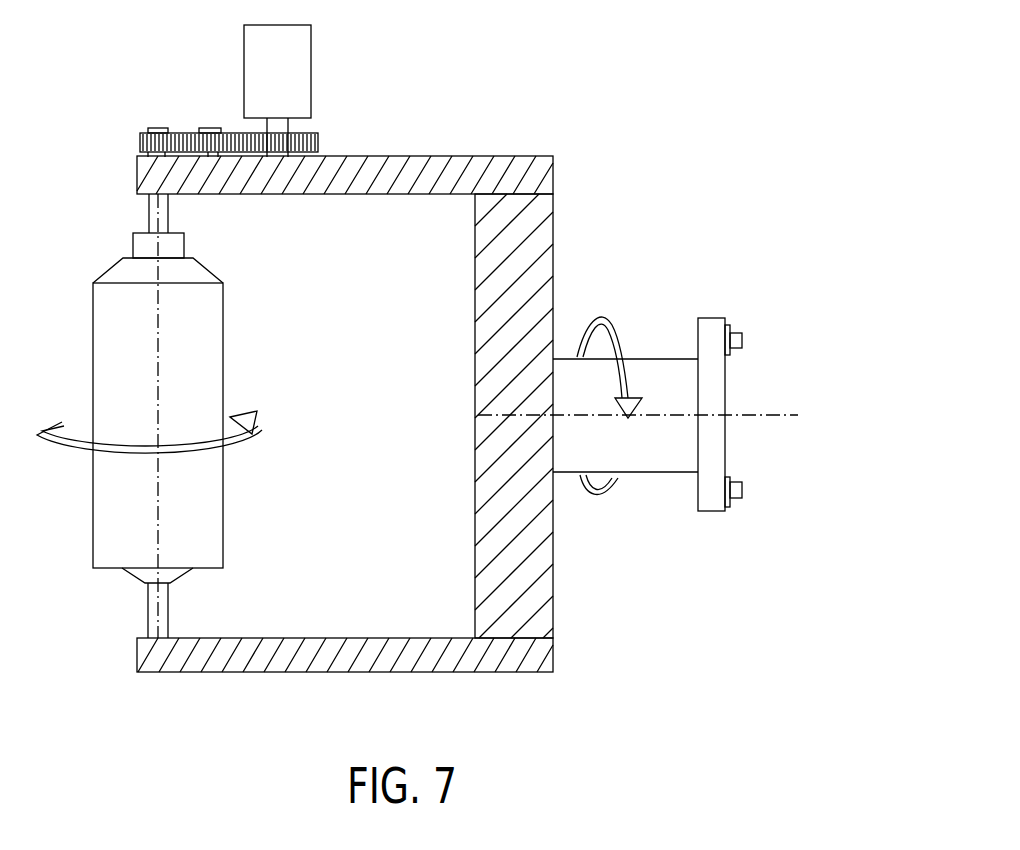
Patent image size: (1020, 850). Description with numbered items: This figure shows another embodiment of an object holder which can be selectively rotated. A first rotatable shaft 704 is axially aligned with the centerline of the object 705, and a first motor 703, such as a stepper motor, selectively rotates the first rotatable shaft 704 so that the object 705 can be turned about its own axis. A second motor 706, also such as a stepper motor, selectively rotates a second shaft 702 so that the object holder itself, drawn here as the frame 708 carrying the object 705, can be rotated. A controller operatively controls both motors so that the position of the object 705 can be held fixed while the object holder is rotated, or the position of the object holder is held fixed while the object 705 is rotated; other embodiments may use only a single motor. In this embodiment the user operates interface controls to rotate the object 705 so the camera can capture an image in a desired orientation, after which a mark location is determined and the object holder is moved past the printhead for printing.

The shaft 702 is at (655, 358).
The first motor 703 is at (312, 67).
The first rotatable shaft 704 is at (148, 210).
The object 705 is at (225, 353).
The second motor 706 is at (710, 512).
The housing frame 708 is at (553, 252).